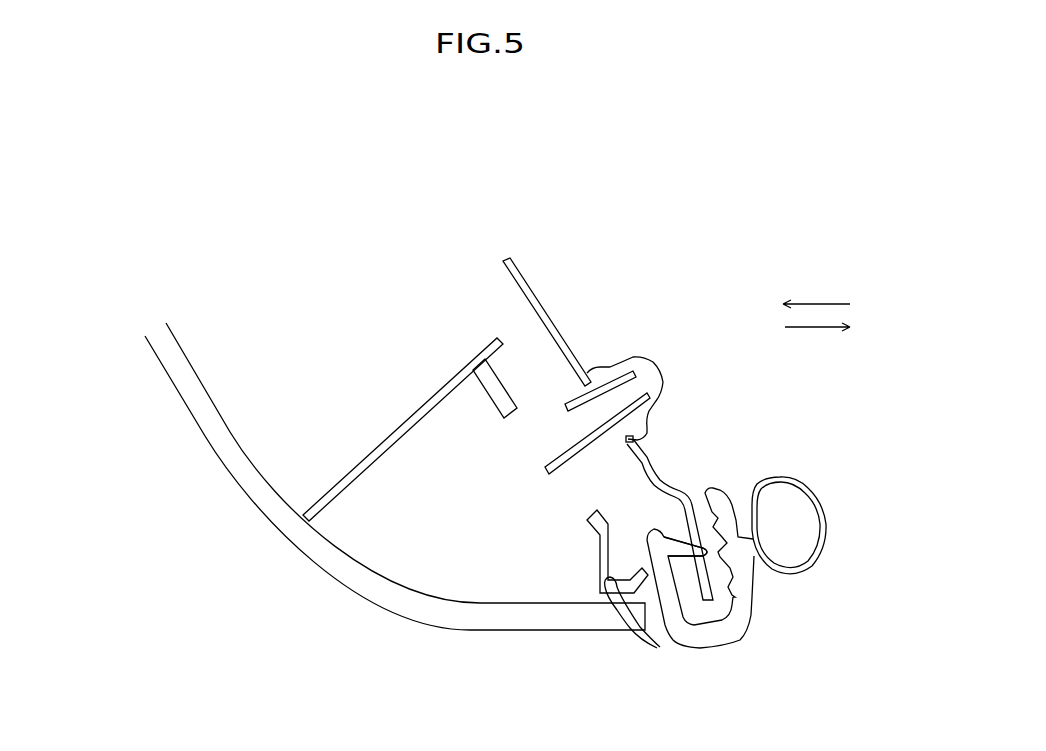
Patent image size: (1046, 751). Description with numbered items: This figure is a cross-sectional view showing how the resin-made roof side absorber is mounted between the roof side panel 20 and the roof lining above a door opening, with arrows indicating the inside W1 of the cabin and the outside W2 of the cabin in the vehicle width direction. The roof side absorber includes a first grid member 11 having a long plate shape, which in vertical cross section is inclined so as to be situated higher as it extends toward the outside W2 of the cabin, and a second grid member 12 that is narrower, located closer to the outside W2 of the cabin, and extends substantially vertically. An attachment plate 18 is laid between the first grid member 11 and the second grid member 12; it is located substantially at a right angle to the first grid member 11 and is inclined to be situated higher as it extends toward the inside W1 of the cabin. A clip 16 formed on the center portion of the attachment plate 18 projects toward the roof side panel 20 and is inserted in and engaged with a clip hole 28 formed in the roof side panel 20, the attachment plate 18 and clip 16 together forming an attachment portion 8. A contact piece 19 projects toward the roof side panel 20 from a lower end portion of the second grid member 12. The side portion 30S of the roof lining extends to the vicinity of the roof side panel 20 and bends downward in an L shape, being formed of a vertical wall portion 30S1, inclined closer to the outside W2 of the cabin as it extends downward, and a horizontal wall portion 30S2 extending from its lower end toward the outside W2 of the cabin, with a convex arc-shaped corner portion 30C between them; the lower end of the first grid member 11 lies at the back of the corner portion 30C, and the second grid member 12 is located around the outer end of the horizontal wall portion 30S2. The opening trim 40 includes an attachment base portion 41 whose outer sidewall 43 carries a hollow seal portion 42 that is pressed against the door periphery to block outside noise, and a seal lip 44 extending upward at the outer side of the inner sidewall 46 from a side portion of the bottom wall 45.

The attachment portion 8 is at (553, 345).
The first grid member 11 is at (397, 438).
The second grid member 12 is at (605, 543).
The clip 16 is at (673, 357).
The attachment plate 18 is at (502, 398).
The contact piece 19 is at (654, 590).
The roof side panel 20 is at (512, 272).
The clip hole 28 is at (628, 438).
The side portion 30S is at (356, 522).
The vertical wall portion 30S1 is at (178, 367).
The horizontal wall portion 30S2 is at (523, 613).
The corner portion 30C is at (360, 588).
The opening trim 40 is at (804, 648).
The attachment base portion 41 is at (690, 572).
The hollow seal portion 42 is at (818, 516).
The sidewall 43 is at (735, 537).
The seal lip 44 is at (652, 636).
The bottom wall 45 is at (717, 630).
The sidewall 46 is at (663, 572).
The inside of the cabin W1 is at (834, 303).
The outside of the cabin W2 is at (835, 328).